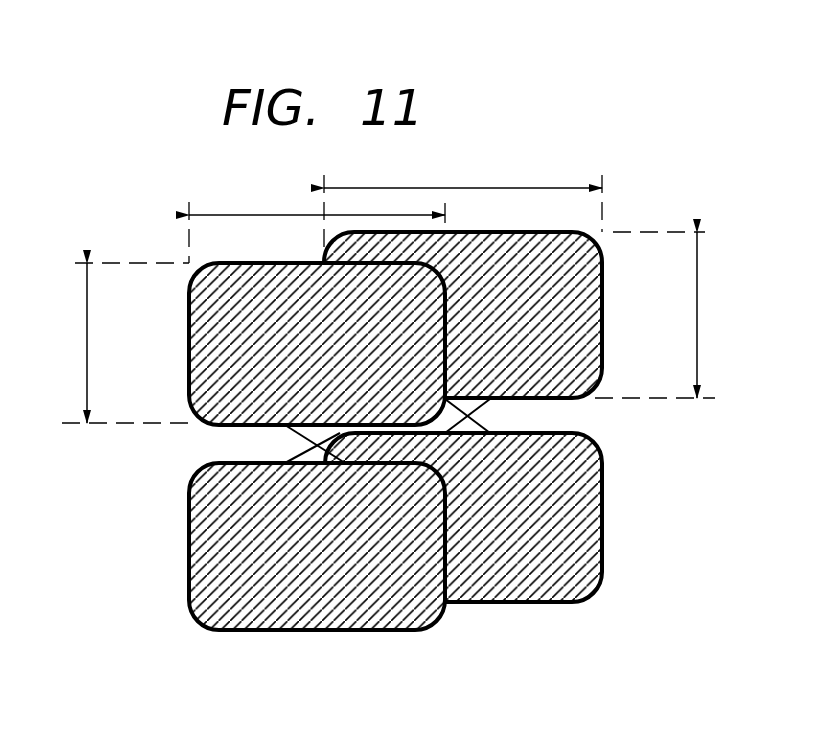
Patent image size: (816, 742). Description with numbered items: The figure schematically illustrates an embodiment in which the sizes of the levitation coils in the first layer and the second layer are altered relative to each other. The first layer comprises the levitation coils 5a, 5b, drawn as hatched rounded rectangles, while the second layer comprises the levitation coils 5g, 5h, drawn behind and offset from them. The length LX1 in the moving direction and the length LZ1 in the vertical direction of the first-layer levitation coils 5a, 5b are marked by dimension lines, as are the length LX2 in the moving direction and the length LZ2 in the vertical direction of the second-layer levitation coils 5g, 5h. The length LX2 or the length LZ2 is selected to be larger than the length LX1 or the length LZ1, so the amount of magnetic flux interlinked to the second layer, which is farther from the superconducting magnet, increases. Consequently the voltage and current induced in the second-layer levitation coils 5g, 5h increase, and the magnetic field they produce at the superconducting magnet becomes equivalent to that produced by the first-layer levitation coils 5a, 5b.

The levitation coil 5a is at (189, 298).
The levitation coil 5b is at (189, 498).
The levitation coil 5g is at (605, 276).
The levitation coil 5h is at (603, 498).
The length in the moving direction of the first-layer levitation coils LX1 is at (317, 221).
The length in the moving direction of the second-layer levitation coils LX2 is at (463, 210).
The length in the vertical direction of the first-layer levitation coils LZ1 is at (114, 343).
The length in the vertical direction of the second-layer levitation coils LZ2 is at (670, 315).